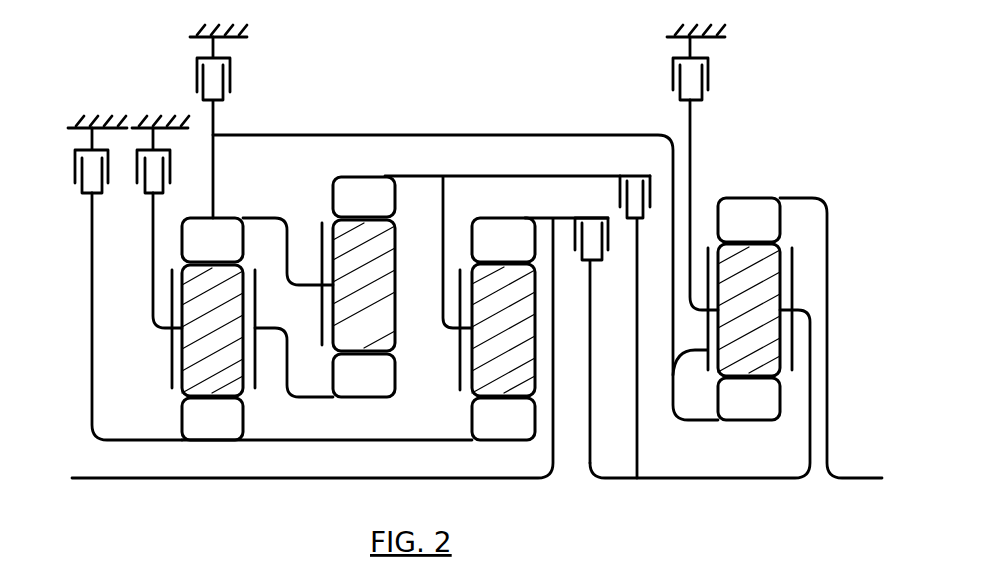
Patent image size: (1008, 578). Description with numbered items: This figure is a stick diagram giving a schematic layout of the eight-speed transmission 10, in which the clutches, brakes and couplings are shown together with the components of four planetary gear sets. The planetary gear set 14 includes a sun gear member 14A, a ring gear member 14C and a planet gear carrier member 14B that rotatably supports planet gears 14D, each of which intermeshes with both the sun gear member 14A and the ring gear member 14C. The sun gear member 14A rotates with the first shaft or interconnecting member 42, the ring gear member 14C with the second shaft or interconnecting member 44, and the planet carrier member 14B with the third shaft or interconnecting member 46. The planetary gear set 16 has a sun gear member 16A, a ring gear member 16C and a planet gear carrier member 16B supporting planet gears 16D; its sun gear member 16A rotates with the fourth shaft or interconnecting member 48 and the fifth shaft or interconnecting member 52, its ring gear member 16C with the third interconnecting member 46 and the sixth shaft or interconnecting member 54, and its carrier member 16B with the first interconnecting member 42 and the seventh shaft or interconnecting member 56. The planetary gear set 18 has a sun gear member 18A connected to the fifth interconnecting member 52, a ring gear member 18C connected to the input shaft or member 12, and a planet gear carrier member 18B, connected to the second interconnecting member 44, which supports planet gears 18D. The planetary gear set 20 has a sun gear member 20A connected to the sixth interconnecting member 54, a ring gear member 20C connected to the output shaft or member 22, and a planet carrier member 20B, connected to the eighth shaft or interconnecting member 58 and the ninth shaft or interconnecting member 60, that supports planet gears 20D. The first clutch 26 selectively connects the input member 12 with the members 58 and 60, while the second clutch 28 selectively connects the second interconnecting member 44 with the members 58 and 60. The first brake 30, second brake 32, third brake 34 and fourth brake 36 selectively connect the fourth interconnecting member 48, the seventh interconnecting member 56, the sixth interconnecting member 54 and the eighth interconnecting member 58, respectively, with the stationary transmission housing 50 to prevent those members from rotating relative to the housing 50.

The eight speed transmission 10 is at (798, 106).
The input shaft or member 12 is at (545, 217).
The planetary gear set 14 is at (342, 325).
The sun gear member 14A is at (364, 375).
The planet gear carrier member 14B is at (321, 235).
The ring gear member 14C is at (364, 197).
The planet gears 14D is at (364, 285).
The planetary gear set 16 is at (203, 376).
The sun gear member 16A is at (212, 419).
The planet gear carrier member 16B is at (171, 343).
The ring gear member 16C is at (212, 240).
The planet gears 16D is at (212, 330).
The planetary gear set 18 is at (469, 375).
The sun gear member 18A is at (503, 419).
The planet gear carrier member 18B is at (459, 368).
The ring gear member 18C is at (503, 240).
The planet gears 18D is at (503, 330).
The planetary gear set 20 is at (768, 360).
The sun gear member 20A is at (749, 399).
The planet carrier member 20B is at (672, 382).
The ring gear member 20C is at (749, 220).
The planet gears 20D is at (749, 310).
The output shaft or member 22 is at (860, 480).
The first clutch 26 is at (577, 237).
The second clutch 28 is at (618, 195).
The first brake 30 is at (90, 195).
The second brake 32 is at (150, 195).
The third brake 34 is at (230, 75).
The fourth brake 36 is at (708, 72).
The first shaft or interconnecting member 42 is at (310, 398).
The second shaft or interconnecting member 44 is at (418, 175).
The third shaft or interconnecting member 46 is at (285, 245).
The fourth shaft or interconnecting member 48 is at (92, 347).
The transmission housing 50 is at (192, 31).
The fifth shaft or interconnecting member 52 is at (287, 441).
The sixth shaft or interconnecting member 54 is at (343, 134).
The seventh shaft or interconnecting member 56 is at (152, 300).
The eighth shaft or interconnecting member 58 is at (690, 118).
The ninth shaft or interconnecting member 60 is at (690, 480).